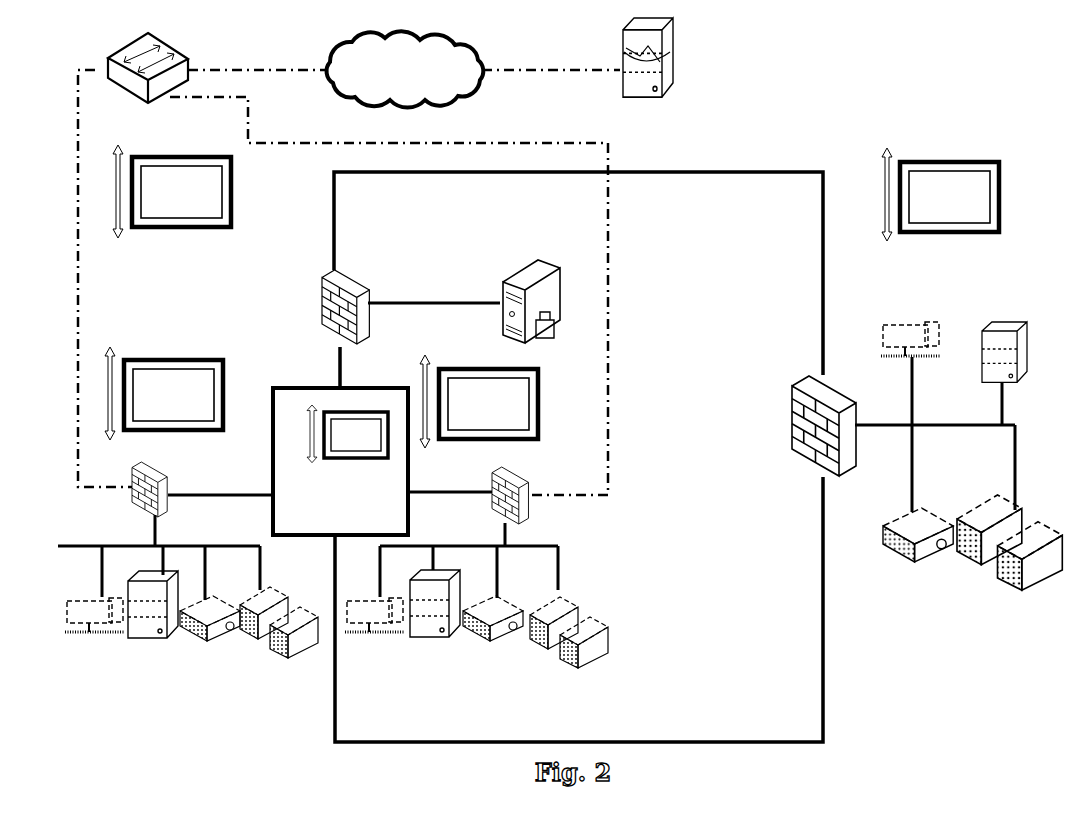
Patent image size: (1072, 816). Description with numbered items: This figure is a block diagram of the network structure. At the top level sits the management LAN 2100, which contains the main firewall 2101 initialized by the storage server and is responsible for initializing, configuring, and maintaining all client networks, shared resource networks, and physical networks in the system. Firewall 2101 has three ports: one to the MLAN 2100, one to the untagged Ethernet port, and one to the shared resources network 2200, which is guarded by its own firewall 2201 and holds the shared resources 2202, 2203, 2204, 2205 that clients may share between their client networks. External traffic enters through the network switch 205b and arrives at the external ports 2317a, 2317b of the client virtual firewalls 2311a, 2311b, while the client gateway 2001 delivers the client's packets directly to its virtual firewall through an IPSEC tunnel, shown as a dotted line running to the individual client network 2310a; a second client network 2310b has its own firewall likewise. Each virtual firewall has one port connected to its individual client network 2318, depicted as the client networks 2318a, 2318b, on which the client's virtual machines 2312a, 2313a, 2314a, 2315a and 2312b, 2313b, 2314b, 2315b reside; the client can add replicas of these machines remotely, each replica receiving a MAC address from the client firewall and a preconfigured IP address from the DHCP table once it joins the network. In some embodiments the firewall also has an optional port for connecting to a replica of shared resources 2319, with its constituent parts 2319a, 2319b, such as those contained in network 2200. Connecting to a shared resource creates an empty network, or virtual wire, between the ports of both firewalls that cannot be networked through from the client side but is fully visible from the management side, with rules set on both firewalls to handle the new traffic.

The network switch 205b is at (148, 83).
The gateway 2001 is at (648, 74).
The management LAN 2100 is at (172, 205).
The external port 2317a is at (349, 278).
The external port 2317b is at (425, 296).
The firewall 2101 is at (326, 310).
The client network 2310a is at (164, 402).
The client network 2310b is at (479, 408).
The replica of shared resources 2319 is at (340, 461).
The replica of shared resources 2319a is at (308, 445).
The replica of shared resources 2319b is at (363, 449).
The client network 2318 is at (330, 484).
The virtual firewall 2311a is at (132, 504).
The virtual firewall 2311b is at (542, 506).
The client network 2318a is at (159, 562).
The client network 2318b is at (469, 560).
The machine 2312a is at (89, 644).
The machine 2313a is at (153, 631).
The machine 2314a is at (214, 643).
The machine 2315a is at (282, 639).
The machine 2312b is at (375, 644).
The machine 2313b is at (442, 630).
The machine 2314b is at (506, 643).
The machine 2315b is at (576, 644).
The shared resources network 2200 is at (940, 204).
The firewall 2201 is at (903, 441).
The shared resource 2202 is at (911, 404).
The shared resource 2203 is at (1000, 360).
The shared resource 2204 is at (918, 556).
The shared resource 2205 is at (1009, 514).